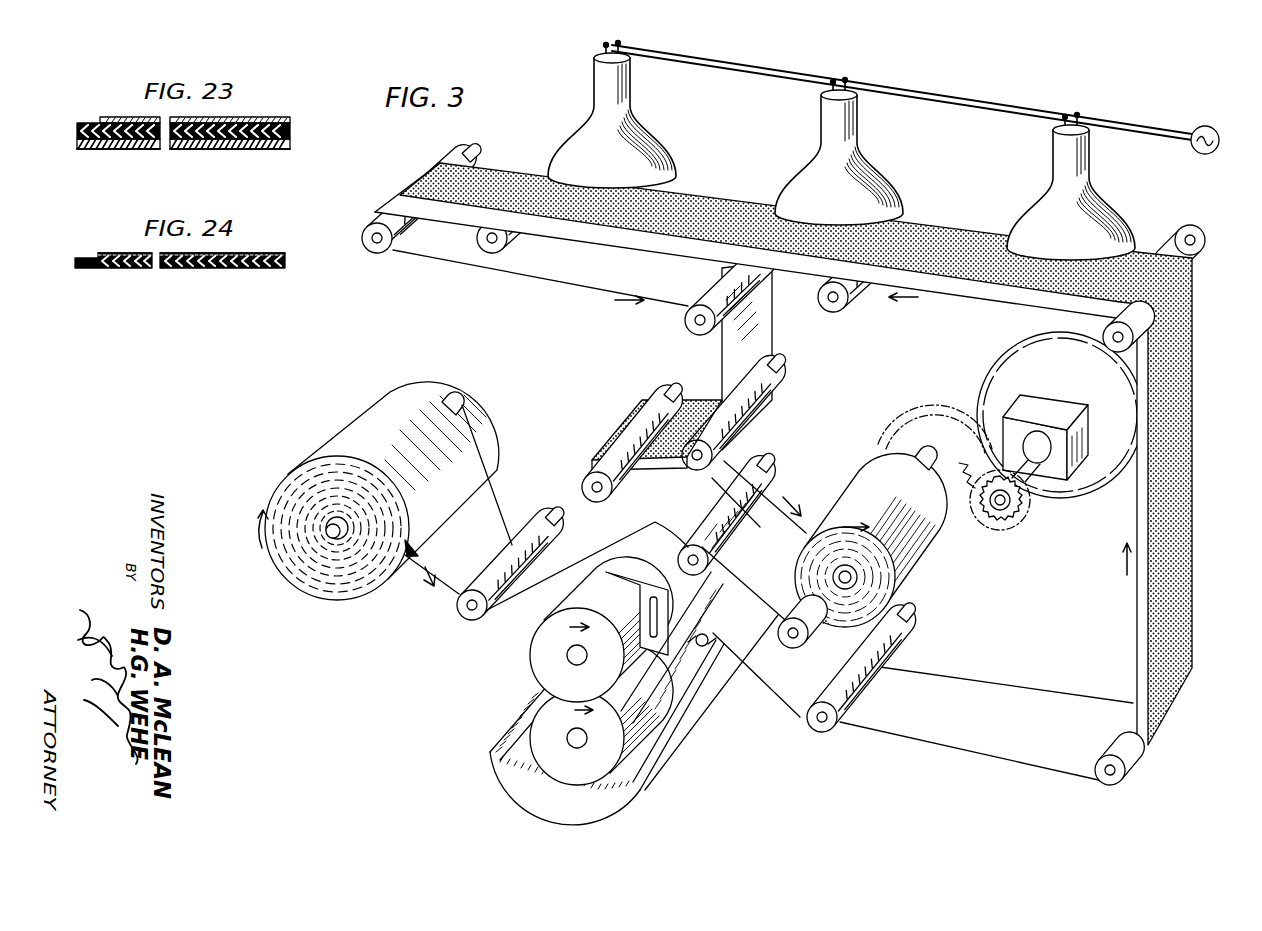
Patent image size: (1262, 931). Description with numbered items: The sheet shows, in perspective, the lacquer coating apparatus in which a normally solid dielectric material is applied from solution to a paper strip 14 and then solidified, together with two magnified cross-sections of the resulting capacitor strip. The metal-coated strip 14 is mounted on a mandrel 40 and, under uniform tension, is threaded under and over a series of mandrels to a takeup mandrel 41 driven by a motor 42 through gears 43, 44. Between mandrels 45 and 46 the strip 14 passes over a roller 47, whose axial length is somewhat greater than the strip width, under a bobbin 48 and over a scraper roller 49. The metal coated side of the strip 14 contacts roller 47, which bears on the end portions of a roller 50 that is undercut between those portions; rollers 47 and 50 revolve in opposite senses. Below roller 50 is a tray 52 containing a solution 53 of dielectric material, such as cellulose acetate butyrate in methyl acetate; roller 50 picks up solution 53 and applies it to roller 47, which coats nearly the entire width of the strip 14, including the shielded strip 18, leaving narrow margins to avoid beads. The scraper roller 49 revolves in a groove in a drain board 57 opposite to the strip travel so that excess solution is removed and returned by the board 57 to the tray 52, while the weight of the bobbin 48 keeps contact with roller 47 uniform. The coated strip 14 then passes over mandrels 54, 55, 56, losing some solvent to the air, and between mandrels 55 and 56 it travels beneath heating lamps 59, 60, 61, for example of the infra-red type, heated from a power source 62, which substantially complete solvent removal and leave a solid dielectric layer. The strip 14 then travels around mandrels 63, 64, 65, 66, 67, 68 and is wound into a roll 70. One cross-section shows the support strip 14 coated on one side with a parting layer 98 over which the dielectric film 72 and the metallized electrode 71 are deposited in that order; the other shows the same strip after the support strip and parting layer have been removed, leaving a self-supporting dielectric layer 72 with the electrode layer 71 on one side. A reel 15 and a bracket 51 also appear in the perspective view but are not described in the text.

In FIG. 23, the paper strip 14 is at (291, 148).
In FIG. 3, the paper strip 14 is at (470, 477).
In FIG. 3, the supply reel 15 is at (347, 434).
In FIG. 3, the shielded strip 18 is at (1136, 620).
In FIG. 3, the mandrel 40 is at (454, 396).
In FIG. 3, the takeup mandrel 41 is at (931, 452).
In FIG. 3, the motor 42 is at (1035, 304).
In FIG. 3, the gear 43 is at (1010, 520).
In FIG. 3, the gear 44 is at (937, 406).
In FIG. 3, the mandrel 45 is at (461, 608).
In FIG. 3, the mandrel 46 is at (818, 726).
In FIG. 3, the roller 47 is at (540, 648).
In FIG. 3, the bobbin 48 is at (708, 611).
In FIG. 3, the scraper roller 49 is at (705, 648).
In FIG. 3, the roller 50 is at (548, 710).
In FIG. 3, the bracket 51 is at (673, 670).
In FIG. 3, the tray 52 is at (522, 776).
In FIG. 3, the solution 53 is at (510, 745).
In FIG. 3, the mandrel 54 is at (1115, 780).
In FIG. 3, the mandrel 55 is at (1200, 242).
In FIG. 3, the mandrel 56 is at (518, 229).
In FIG. 3, the drain board 57 is at (692, 700).
In FIG. 3, the heating lamp 59 is at (1114, 199).
In FIG. 3, the heating lamp 60 is at (862, 167).
In FIG. 3, the heating lamp 61 is at (652, 137).
In FIG. 3, the power source 62 is at (1207, 126).
In FIG. 3, the mandrel 63 is at (370, 250).
In FIG. 3, the mandrel 64 is at (692, 326).
In FIG. 3, the mandrel 65 is at (782, 374).
In FIG. 3, the mandrel 66 is at (584, 481).
In FIG. 3, the mandrel 67 is at (776, 461).
In FIG. 3, the mandrel 68 is at (790, 616).
In FIG. 3, the roll 70 is at (921, 556).
In FIG. 23, the metallized electrode 71 is at (271, 117).
In FIG. 24, the metallized electrode 71 is at (270, 253).
In FIG. 23, the dielectric film 72 is at (291, 123).
In FIG. 24, the dielectric film 72 is at (270, 269).
In FIG. 23, the parting layer 98 is at (292, 139).